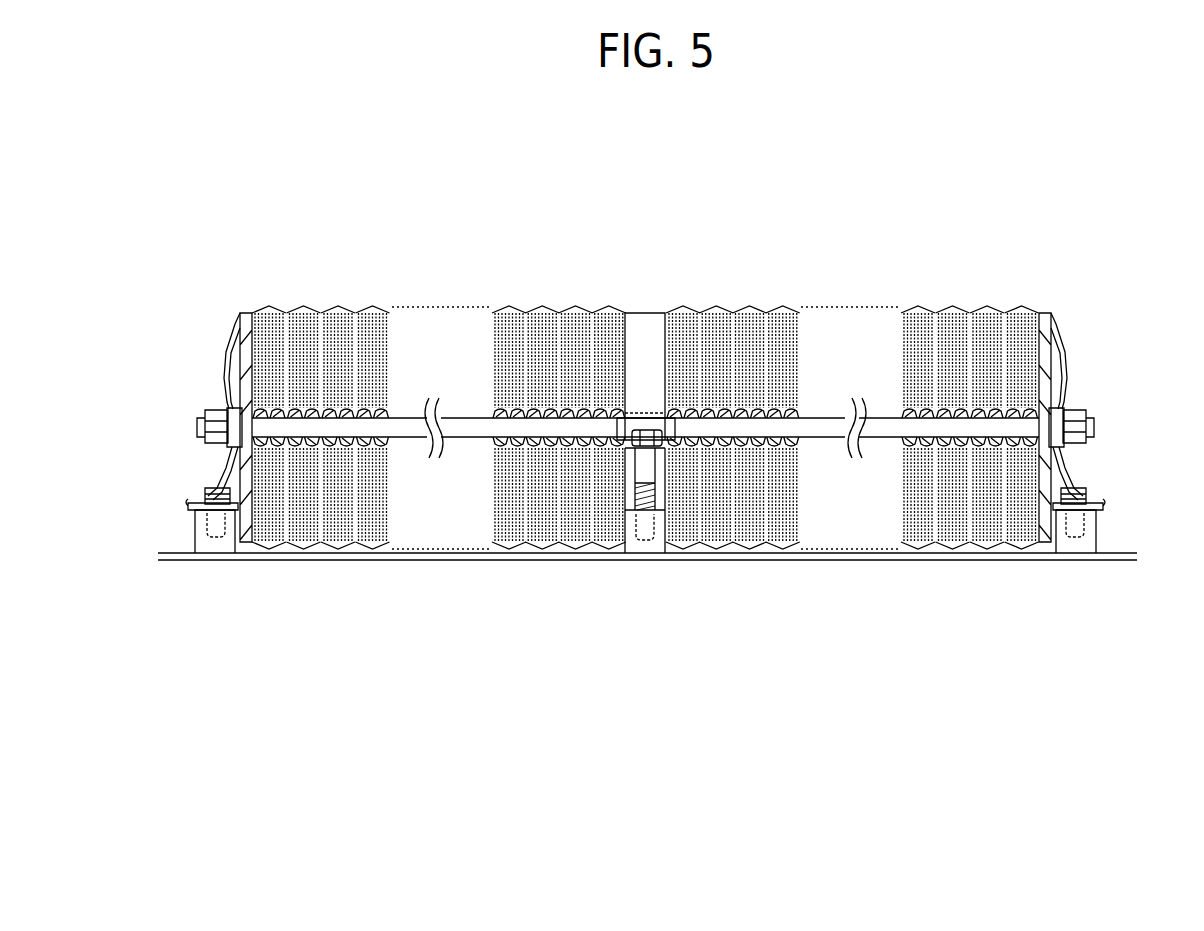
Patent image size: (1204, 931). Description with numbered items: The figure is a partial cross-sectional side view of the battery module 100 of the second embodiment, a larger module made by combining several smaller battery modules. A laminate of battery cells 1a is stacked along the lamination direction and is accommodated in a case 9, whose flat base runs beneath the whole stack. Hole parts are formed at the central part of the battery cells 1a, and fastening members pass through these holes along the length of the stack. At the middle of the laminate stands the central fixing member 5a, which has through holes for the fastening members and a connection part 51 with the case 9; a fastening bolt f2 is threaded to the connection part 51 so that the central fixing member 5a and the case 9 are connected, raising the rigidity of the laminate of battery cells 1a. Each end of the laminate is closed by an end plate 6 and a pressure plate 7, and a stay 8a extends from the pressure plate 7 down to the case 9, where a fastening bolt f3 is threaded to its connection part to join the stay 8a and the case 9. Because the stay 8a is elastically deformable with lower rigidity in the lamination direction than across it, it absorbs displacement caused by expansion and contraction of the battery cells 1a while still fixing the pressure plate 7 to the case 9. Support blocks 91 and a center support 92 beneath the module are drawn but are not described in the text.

The battery module 100 is at (912, 182).
The battery cells 1a is at (977, 283).
The central fixing member 5a is at (643, 313).
The end plates 6 is at (1062, 330).
The pressure plates 7 is at (1066, 362).
The stay 8a is at (1078, 477).
The fastening bolt f3 is at (1090, 496).
The case 9 is at (313, 568).
The support block 91 is at (216, 553).
The center support 92 is at (640, 553).
The connection part 51 is at (628, 420).
The fastening bolt f2 is at (648, 465).